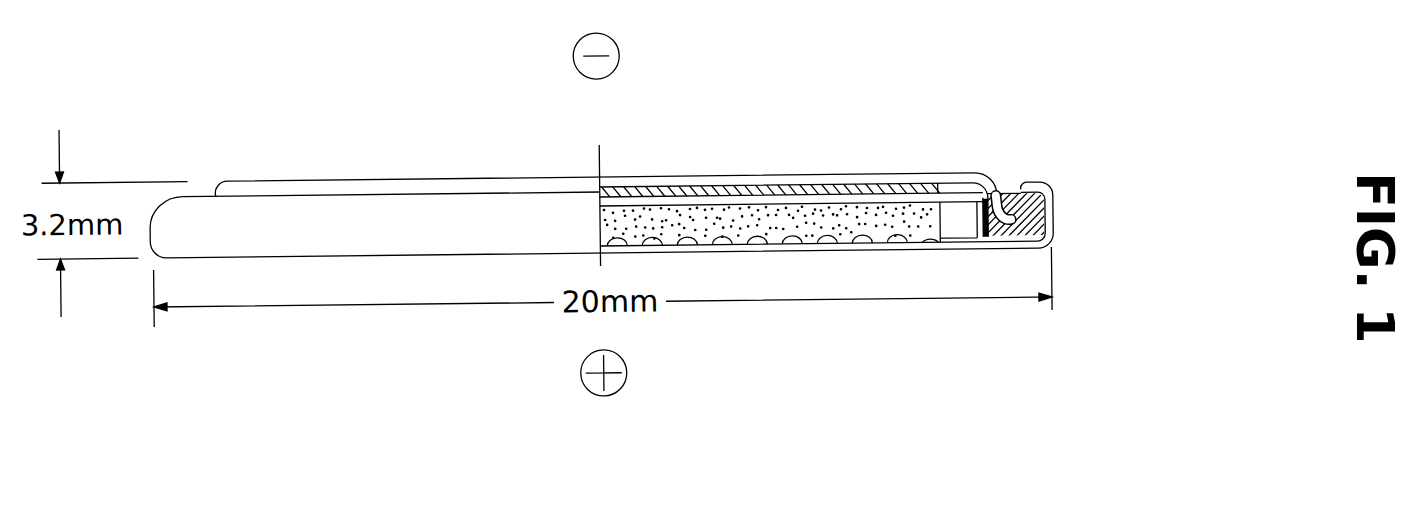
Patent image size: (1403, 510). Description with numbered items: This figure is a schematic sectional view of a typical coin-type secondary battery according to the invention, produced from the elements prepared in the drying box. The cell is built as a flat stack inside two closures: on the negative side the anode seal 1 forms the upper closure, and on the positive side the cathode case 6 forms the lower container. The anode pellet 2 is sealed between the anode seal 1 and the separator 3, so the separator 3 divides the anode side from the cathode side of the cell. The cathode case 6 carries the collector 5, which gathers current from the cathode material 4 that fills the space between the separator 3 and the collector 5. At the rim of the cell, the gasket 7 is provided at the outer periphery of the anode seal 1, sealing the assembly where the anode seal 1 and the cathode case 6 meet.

The anode seal 1 is at (637, 177).
The anode pellet 2 is at (692, 189).
The separator 3 is at (740, 203).
The positive electrode mix 4 is at (792, 219).
The collector 5 is at (825, 240).
The cathode case 6 is at (878, 248).
The gasket 7 is at (1010, 192).